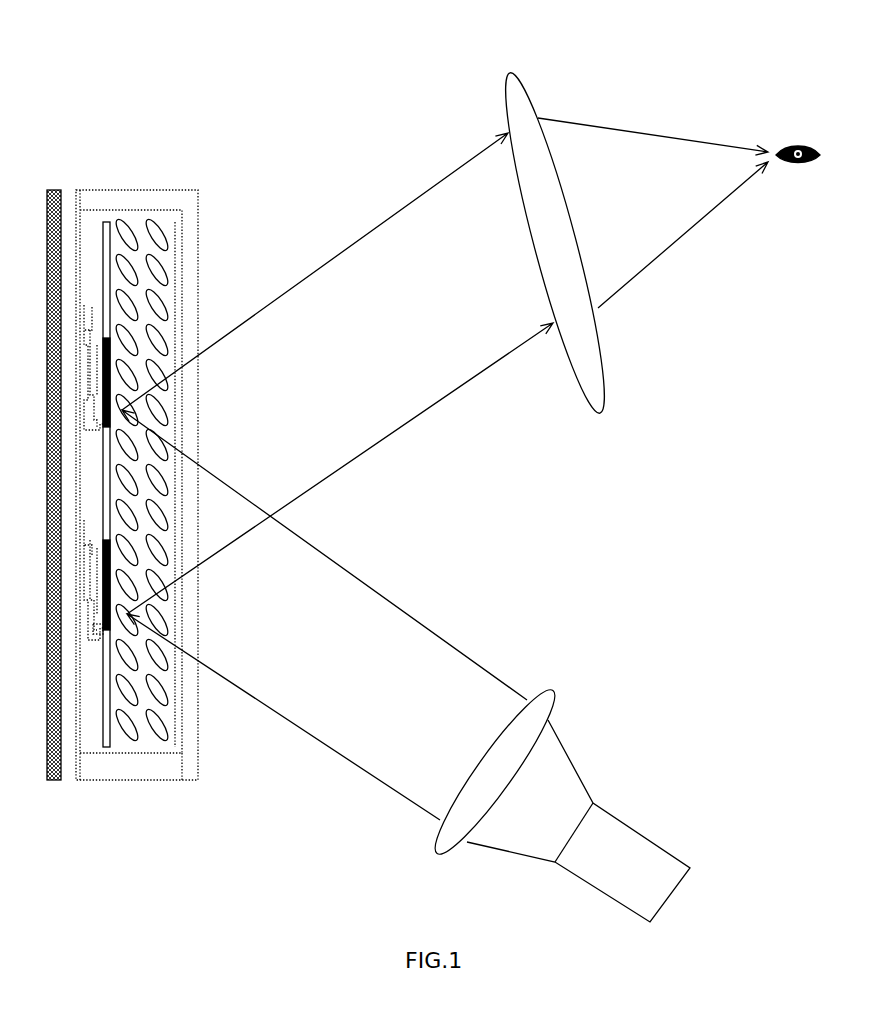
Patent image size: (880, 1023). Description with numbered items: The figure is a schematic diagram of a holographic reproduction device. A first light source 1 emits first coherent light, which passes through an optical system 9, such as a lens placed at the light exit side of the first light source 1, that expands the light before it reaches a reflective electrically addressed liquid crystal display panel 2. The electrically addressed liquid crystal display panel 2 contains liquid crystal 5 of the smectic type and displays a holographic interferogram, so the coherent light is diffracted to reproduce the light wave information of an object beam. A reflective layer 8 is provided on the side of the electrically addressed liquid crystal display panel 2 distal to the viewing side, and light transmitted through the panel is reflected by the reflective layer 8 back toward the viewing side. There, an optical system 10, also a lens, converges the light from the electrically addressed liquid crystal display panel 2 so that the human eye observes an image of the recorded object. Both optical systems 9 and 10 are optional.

The first light source 1 is at (672, 854).
The electrically addressed liquid crystal display panel 2 is at (174, 172).
The liquid crystal 5 is at (122, 215).
The reflective layer 8 is at (55, 205).
The optical system 9 is at (552, 687).
The optical system 10 is at (600, 348).